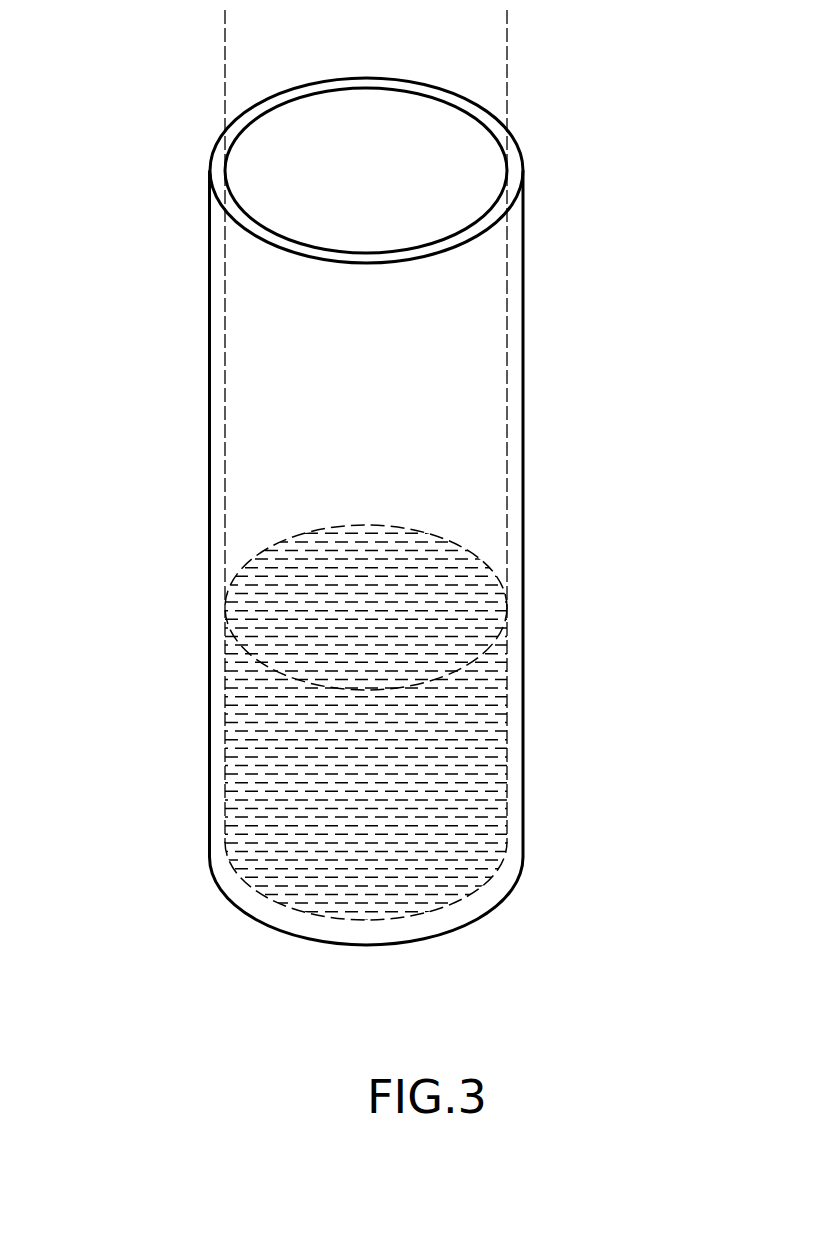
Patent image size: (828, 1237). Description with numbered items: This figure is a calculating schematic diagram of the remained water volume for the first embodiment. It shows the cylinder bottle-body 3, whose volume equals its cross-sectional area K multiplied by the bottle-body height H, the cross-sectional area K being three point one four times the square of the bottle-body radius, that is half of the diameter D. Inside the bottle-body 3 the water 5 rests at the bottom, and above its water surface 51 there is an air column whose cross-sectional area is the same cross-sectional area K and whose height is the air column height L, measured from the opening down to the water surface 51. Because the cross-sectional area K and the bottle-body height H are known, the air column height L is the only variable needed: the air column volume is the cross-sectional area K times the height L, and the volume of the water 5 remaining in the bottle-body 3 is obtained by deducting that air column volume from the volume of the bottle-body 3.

The bottle-body 3 is at (530, 470).
The cross-sectional area K is at (433, 130).
The water 5 is at (465, 745).
The water surface 51 is at (427, 535).
The bottle-body diameter D is at (225, 10).
The bottle-body height H is at (225, 840).
The air column height L is at (225, 608).